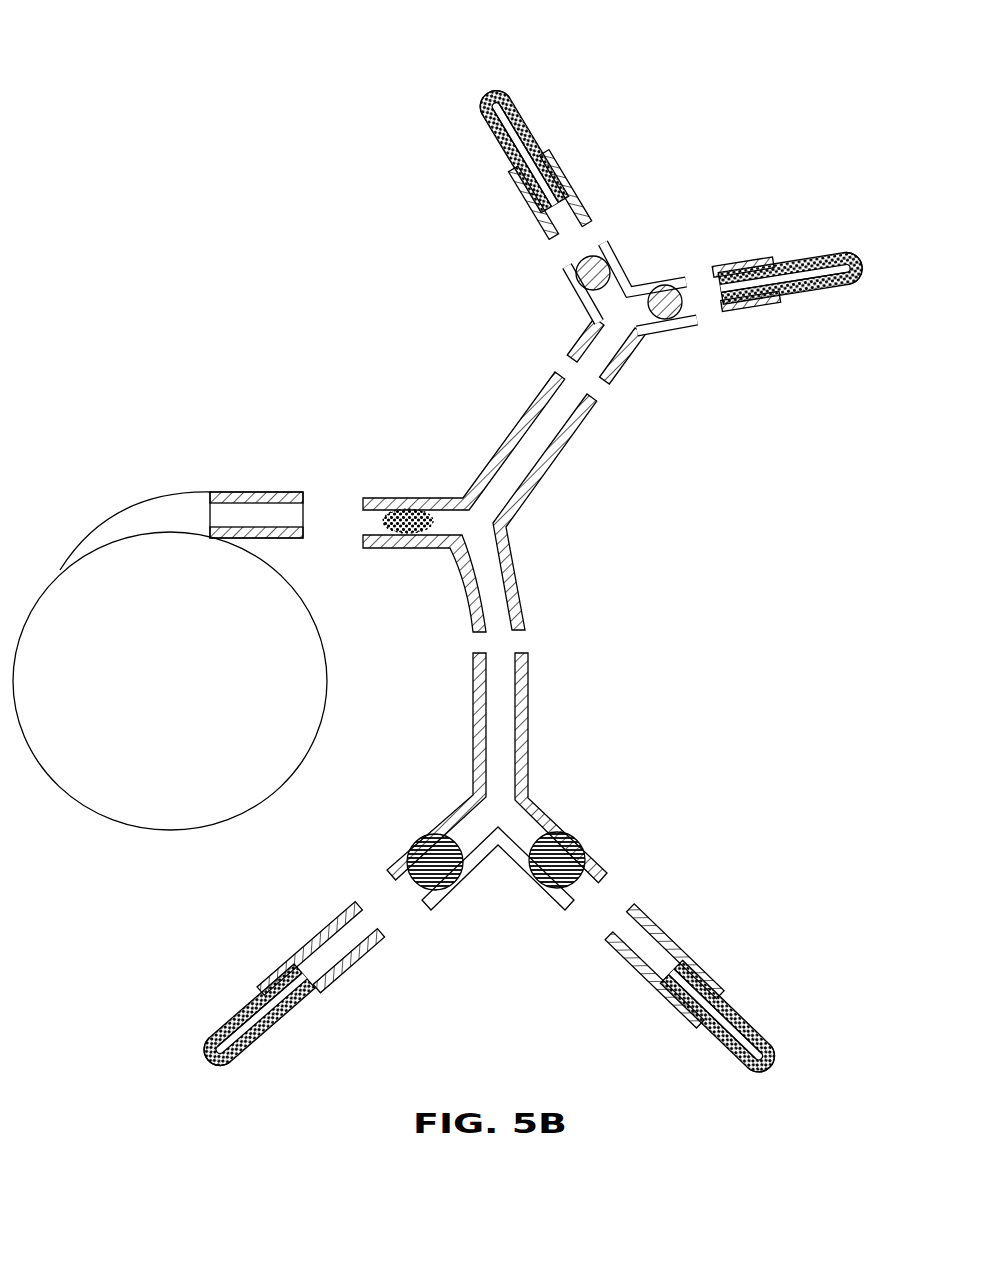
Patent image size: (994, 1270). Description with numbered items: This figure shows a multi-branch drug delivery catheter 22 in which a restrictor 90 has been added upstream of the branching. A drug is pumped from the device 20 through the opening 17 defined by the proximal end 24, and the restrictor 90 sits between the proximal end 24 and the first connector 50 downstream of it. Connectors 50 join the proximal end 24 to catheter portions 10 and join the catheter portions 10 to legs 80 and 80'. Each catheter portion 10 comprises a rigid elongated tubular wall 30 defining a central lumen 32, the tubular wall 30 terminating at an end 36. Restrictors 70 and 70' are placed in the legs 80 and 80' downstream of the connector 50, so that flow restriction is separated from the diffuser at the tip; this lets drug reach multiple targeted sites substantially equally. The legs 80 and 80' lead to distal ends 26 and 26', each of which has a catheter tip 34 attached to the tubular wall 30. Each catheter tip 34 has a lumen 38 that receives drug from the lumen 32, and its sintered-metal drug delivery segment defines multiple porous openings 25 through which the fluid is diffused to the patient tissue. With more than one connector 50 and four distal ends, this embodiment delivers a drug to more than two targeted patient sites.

The catheter portion 10 is at (547, 470).
The opening 17 is at (207, 512).
The device 20 is at (115, 850).
The catheter 22 is at (280, 533).
The proximal end 24 is at (225, 492).
The porous openings 25 is at (510, 96).
The distal end 26 is at (534, 642).
The distal end 26' is at (612, 581).
The tubular wall 30 is at (583, 200).
The central lumen 32 is at (503, 480).
The catheter tip 34 is at (492, 96).
The end 36 is at (550, 148).
The lumen 38 is at (513, 160).
The connector 50 is at (445, 552).
The restrictor 70 is at (549, 597).
The restrictor 70' is at (590, 567).
The leg 80 is at (539, 600).
The leg 80' is at (553, 574).
The restrictor 90 is at (383, 507).